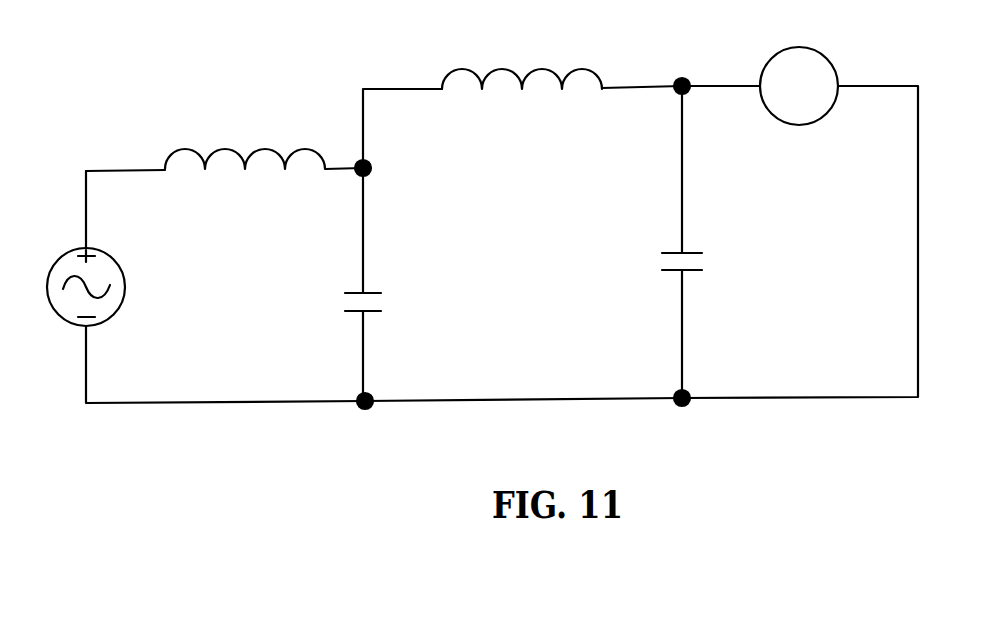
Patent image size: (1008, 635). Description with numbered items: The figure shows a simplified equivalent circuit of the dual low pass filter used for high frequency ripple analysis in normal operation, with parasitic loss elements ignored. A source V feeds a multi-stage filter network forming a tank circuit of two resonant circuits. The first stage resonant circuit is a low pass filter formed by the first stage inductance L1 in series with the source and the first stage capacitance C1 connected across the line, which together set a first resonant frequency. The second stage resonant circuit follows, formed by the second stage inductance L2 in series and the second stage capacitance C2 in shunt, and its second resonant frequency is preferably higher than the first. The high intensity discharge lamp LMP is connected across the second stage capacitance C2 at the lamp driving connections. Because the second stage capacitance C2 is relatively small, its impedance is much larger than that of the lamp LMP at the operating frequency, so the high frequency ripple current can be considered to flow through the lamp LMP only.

The source voltage V is at (108, 287).
The first stage inductance L1 is at (264, 131).
The second stage inductance L2 is at (522, 51).
The first stage capacitance C1 is at (326, 291).
The second stage capacitance C2 is at (644, 251).
The high intensity discharge lamp LMP is at (801, 122).